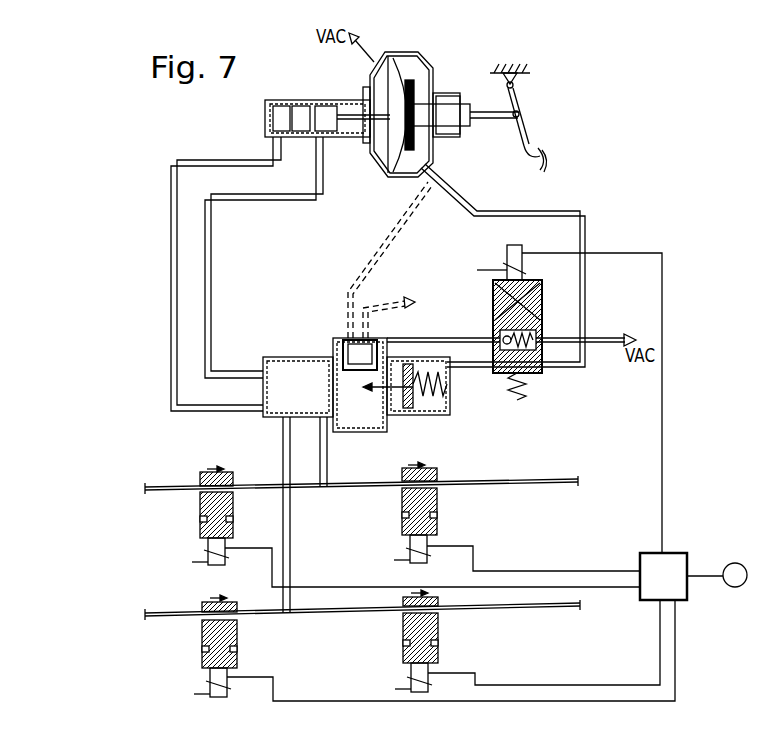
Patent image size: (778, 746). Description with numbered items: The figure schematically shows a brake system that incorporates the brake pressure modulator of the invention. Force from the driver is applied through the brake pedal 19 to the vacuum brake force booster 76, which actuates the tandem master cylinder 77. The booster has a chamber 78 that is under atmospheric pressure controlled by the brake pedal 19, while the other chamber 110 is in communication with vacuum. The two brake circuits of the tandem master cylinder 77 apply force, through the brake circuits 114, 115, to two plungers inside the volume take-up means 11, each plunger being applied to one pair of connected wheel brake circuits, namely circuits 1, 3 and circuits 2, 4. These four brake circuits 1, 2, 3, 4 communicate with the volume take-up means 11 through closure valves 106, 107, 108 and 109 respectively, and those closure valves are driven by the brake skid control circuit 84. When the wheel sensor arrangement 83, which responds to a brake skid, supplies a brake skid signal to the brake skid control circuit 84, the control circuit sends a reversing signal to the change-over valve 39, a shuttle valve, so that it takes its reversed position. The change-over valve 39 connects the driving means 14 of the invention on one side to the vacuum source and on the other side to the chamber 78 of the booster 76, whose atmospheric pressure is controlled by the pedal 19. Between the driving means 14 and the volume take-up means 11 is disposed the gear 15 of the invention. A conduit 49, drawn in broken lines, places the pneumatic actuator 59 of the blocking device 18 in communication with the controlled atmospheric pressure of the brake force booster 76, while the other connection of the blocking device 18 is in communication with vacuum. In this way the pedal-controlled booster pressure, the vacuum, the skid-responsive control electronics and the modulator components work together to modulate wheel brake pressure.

The chamber 78 is at (421, 72).
The other chamber 110 is at (389, 58).
The vacuum brake force booster 76 is at (449, 73).
The tandem master cylinder 77 is at (283, 96).
The brake pedal 19 is at (532, 137).
The brake circuit 115 is at (172, 301).
The brake circuit 114 is at (209, 300).
The volume take-up means 11 is at (293, 352).
The gear 15 is at (376, 438).
The blocking device 18 is at (343, 358).
The pneumatic actuator 59 is at (357, 348).
The conduit 49 is at (391, 250).
The driving means 14 is at (431, 422).
The change-over valve 39 is at (543, 297).
The brake circuit 2 is at (190, 480).
The brake circuit 4 is at (535, 473).
The brake circuit 1 is at (187, 608).
The brake circuit 3 is at (533, 622).
The closure valve 107 is at (205, 531).
The closure valve 106 is at (207, 656).
The closure valve 109 is at (437, 528).
The closure valve 108 is at (439, 657).
The brake skid control circuit 84 is at (683, 590).
The wheel sensor arrangement 83 is at (740, 587).